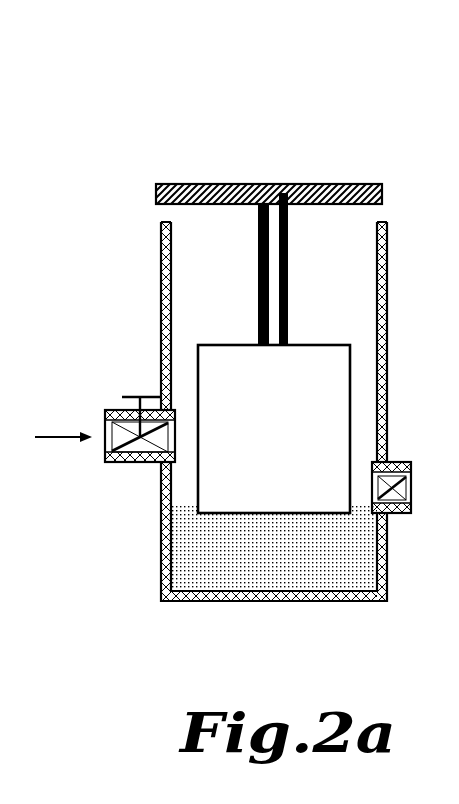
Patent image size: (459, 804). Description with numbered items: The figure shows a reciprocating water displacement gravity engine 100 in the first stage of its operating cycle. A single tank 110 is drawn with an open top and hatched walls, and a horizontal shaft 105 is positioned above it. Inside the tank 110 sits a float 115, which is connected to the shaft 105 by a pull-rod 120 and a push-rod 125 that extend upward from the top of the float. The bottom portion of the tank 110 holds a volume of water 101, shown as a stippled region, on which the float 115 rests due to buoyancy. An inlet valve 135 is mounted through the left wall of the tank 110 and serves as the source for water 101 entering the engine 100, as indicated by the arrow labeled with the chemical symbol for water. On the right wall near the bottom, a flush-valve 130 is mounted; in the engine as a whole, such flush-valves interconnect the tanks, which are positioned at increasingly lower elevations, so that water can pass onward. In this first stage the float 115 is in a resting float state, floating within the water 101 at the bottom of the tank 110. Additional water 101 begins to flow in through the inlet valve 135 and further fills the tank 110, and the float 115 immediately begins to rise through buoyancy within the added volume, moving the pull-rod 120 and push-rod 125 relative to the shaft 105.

The reciprocating water displacement gravity engine 100 is at (244, 357).
The water 101 is at (183, 582).
The shaft 105 is at (156, 190).
The tank 110 is at (161, 500).
The float 115 is at (350, 383).
The pull-rod 120 is at (258, 235).
The push-rod 125 is at (285, 228).
The flush-valve 130 is at (402, 513).
The inlet valve 135 is at (105, 462).